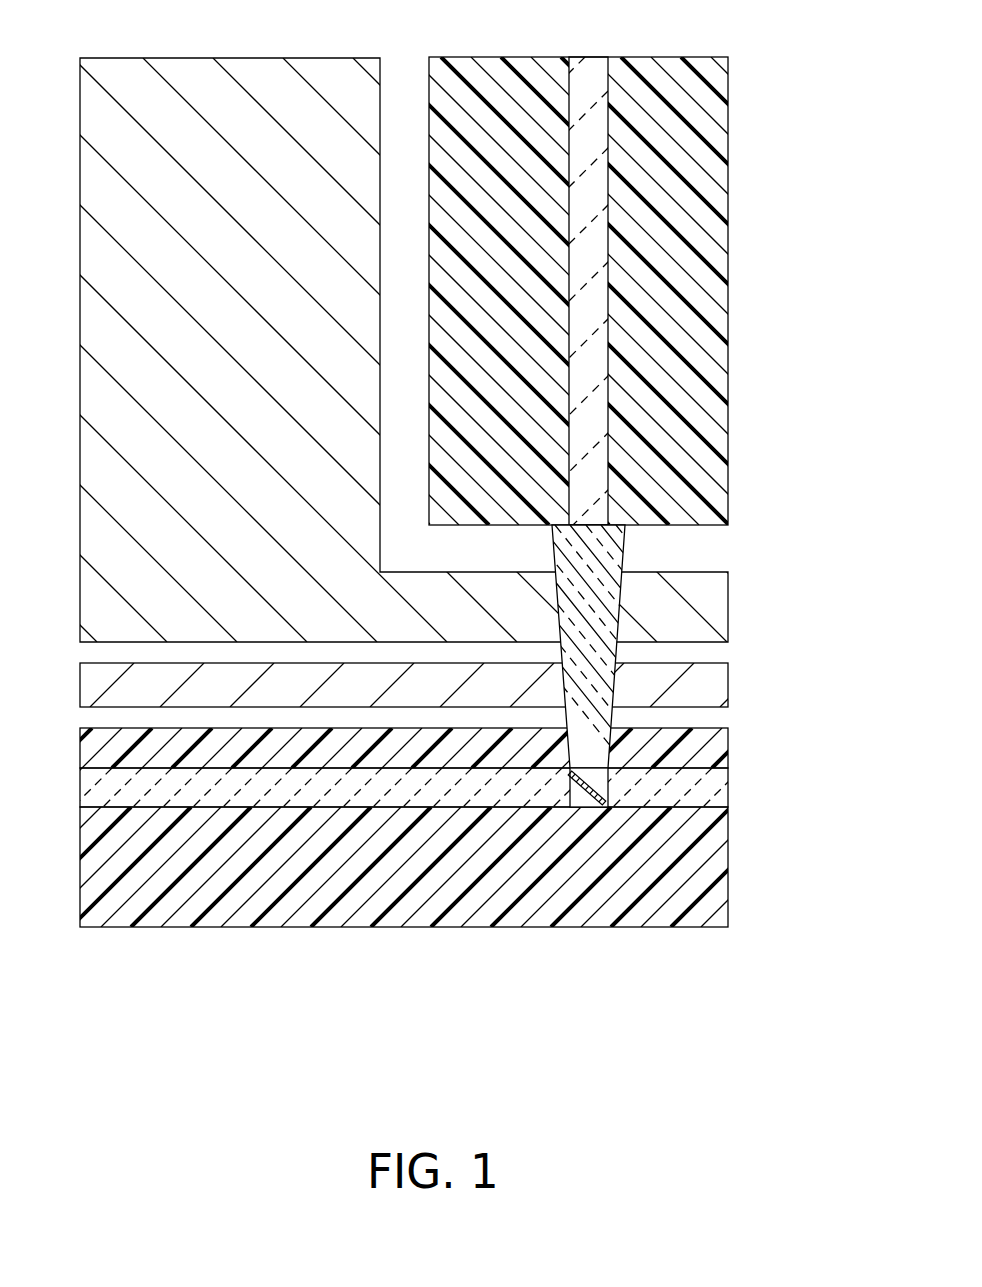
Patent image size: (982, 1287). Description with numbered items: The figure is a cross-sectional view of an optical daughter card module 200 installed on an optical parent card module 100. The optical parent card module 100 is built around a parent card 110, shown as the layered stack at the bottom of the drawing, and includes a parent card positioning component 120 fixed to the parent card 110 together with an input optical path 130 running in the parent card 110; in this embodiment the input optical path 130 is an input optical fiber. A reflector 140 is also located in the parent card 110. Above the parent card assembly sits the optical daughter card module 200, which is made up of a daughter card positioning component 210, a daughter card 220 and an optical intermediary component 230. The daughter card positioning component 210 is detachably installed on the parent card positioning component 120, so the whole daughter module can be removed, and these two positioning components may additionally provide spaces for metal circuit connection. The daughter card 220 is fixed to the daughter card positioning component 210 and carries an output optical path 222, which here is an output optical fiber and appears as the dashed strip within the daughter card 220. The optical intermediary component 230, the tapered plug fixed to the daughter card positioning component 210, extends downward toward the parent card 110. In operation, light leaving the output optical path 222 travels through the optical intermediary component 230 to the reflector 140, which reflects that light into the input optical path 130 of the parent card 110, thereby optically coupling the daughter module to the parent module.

The optical parent card module 100 is at (557, 997).
The parent card 110 is at (388, 897).
The parent card positioning component 120 is at (293, 692).
The input optical path 130 is at (660, 787).
The reflector 140 is at (582, 800).
The optical daughter card module 200 is at (828, 415).
The daughter card positioning component 210 is at (328, 412).
The daughter card 220 is at (667, 487).
The output optical path 222 is at (590, 505).
The optical intermediary component 230 is at (597, 613).